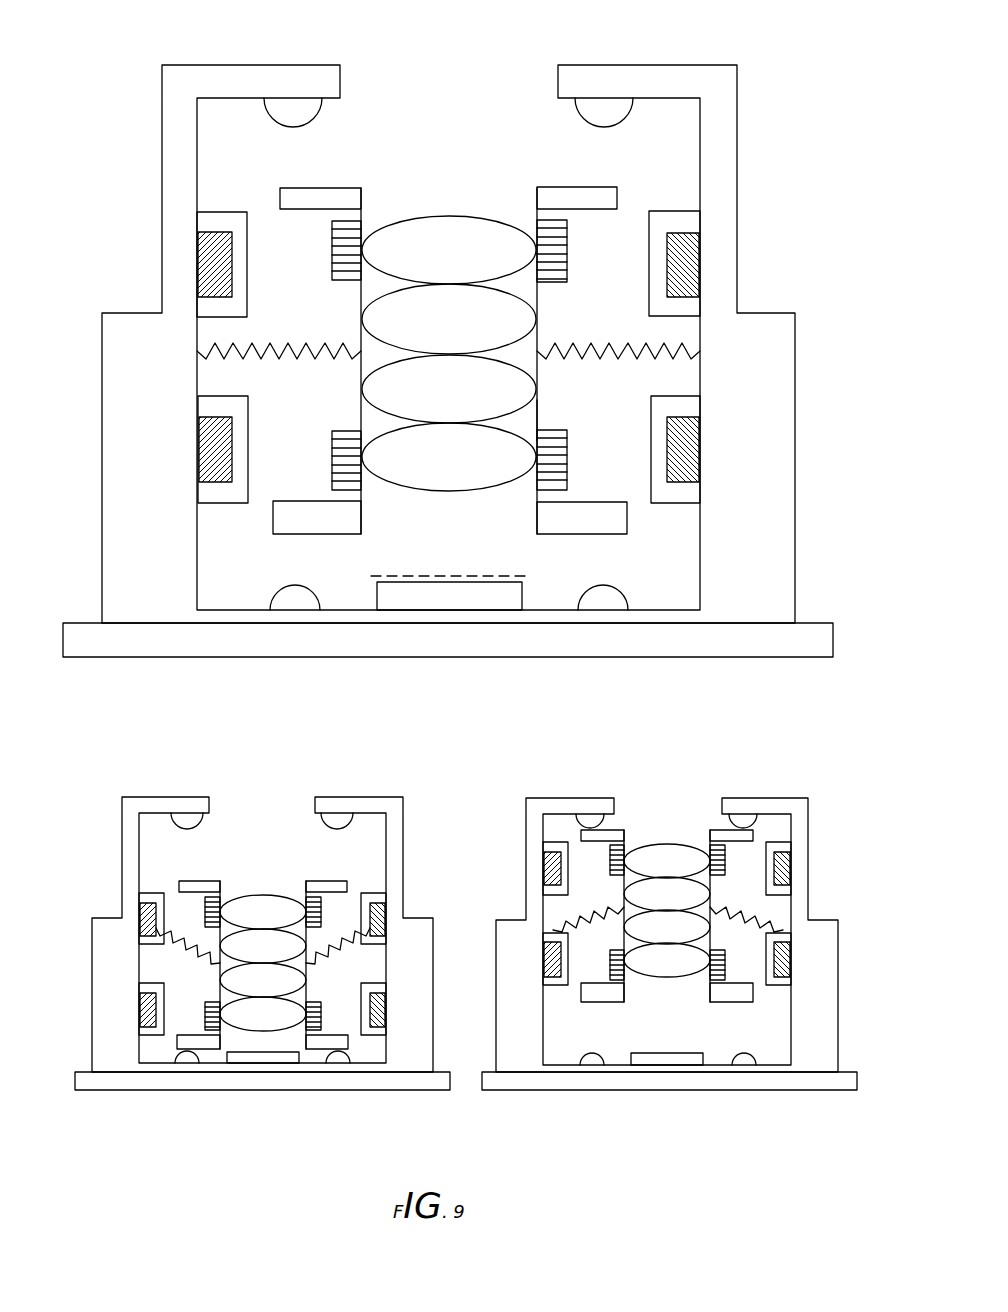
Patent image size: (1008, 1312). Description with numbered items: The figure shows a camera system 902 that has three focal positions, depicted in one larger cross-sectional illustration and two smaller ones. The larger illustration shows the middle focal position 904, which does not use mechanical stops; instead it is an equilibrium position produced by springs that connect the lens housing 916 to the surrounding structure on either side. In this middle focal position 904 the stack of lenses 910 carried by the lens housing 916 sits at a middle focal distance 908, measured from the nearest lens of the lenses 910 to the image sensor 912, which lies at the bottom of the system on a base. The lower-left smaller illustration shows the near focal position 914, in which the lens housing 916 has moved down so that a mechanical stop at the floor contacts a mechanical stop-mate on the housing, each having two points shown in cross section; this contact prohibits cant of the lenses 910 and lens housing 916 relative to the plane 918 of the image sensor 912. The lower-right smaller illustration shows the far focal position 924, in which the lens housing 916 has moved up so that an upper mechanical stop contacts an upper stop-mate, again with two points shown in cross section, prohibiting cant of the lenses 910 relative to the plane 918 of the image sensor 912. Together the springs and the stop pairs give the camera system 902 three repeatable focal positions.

The camera system 902 is at (770, 48).
The middle focal position 904 is at (433, 325).
The middle focal distance 908 is at (442, 491).
The lenses 910 is at (447, 178).
The image sensor 912 is at (485, 590).
The near focal position 914 is at (266, 934).
The lens housing 916 is at (540, 418).
The plane 918 is at (395, 577).
The far focal position 924 is at (669, 913).